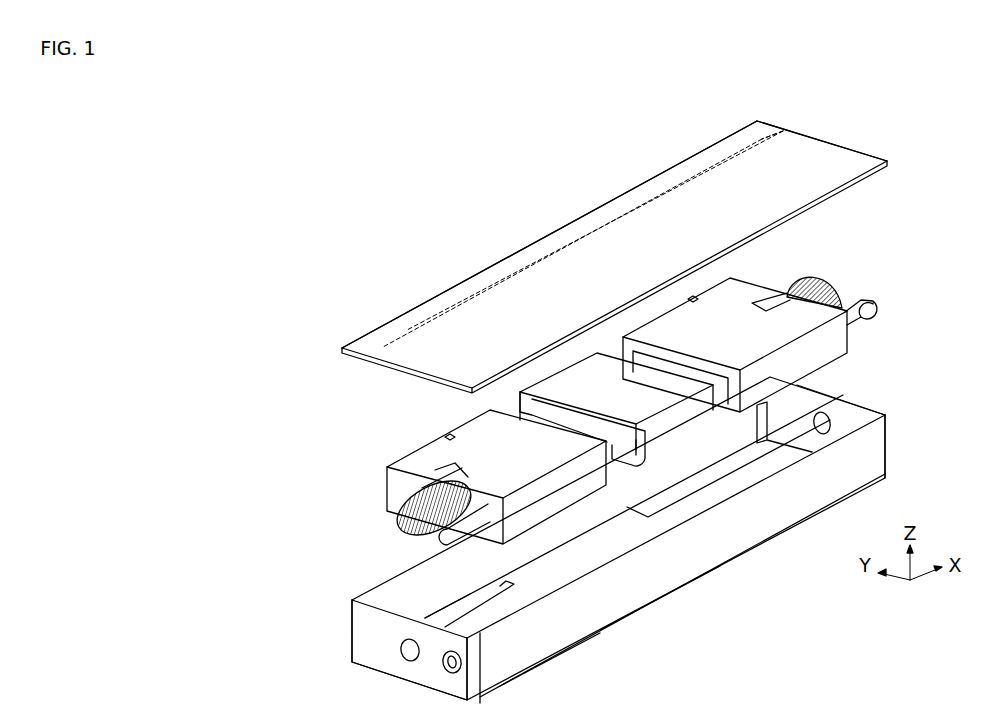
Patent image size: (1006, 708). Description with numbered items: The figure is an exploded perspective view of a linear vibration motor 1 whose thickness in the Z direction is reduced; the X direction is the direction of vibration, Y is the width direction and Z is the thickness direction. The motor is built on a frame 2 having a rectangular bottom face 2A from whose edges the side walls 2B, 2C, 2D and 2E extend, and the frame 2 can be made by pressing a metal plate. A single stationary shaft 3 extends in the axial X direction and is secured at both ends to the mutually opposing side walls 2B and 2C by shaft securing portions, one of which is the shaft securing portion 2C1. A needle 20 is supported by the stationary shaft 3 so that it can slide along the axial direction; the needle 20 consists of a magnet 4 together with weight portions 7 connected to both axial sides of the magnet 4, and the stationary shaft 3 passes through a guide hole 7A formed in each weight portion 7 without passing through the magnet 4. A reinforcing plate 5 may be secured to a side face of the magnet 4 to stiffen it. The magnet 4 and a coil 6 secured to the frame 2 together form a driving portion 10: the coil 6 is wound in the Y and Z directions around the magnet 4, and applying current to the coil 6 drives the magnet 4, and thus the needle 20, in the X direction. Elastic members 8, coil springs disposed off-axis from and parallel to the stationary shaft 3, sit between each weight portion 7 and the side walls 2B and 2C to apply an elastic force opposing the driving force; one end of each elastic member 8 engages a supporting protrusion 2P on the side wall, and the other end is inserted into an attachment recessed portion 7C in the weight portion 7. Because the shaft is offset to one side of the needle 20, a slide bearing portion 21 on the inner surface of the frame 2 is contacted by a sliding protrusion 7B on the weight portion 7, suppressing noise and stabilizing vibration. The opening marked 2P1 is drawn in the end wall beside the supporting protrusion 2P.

The linear vibration motor 1 is at (950, 303).
The frame 2 is at (623, 541).
The bottom face 2A is at (620, 548).
The side wall 2B is at (365, 645).
The side wall 2C is at (885, 407).
The shaft securing portion 2C1 is at (887, 428).
The side wall 2D is at (580, 640).
The side wall 2E is at (438, 603).
The supporting protrusion 2P is at (405, 642).
The threaded hole 2P1 is at (455, 675).
The stationary shaft 3 is at (876, 305).
The magnet 4 is at (480, 385).
The reinforcing plate 5 is at (612, 365).
The coil 6 is at (578, 351).
The weight portion 7 is at (611, 407).
The guide hole 7A is at (470, 546).
The sliding protrusion 7B is at (692, 296).
The attachment recessed portion 7C is at (786, 294).
The elastic member 8 is at (836, 288).
The driving portion 10 is at (549, 234).
The needle 20 is at (838, 160).
The slide bearing portion 21 is at (492, 587).